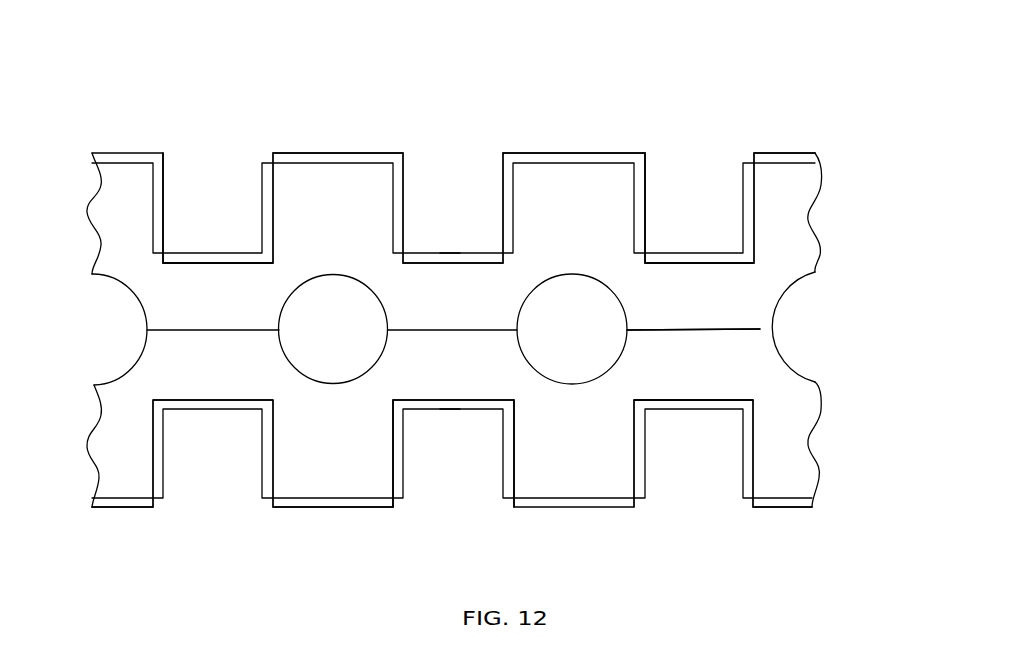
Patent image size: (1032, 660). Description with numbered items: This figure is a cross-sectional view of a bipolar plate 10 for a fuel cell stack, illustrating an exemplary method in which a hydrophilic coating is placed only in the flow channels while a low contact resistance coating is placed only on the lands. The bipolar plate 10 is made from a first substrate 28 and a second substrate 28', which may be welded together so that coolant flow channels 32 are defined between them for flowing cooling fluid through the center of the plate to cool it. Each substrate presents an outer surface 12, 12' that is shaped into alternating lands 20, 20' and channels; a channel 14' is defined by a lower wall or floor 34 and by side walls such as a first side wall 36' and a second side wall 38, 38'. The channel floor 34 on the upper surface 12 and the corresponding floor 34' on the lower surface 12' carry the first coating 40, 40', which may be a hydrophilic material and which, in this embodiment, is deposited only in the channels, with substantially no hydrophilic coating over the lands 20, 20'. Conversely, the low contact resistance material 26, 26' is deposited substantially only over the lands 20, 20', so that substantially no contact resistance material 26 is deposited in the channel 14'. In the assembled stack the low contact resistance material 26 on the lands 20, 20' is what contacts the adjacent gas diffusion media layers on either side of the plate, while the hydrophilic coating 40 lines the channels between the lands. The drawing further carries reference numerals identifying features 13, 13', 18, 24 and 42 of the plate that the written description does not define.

The bipolar plate 10 is at (830, 186).
The surface 12 is at (480, 177).
The surface 12' is at (482, 481).
The first side 13 is at (528, 346).
The second side 13' is at (773, 309).
The channel 14' is at (694, 331).
The lateral direction arrows 18 is at (129, 322).
The land 20 is at (194, 166).
The land 20' is at (362, 496).
The top wall portion 24 is at (308, 156).
The low contact resistance material 26 is at (393, 169).
The low contact resistance material 26' is at (440, 549).
The first substrate 28 is at (830, 267).
The second substrate 28' is at (835, 444).
The coolant flow channel 32 is at (550, 379).
The lower wall or floor 34 is at (443, 277).
The layer thickness 34' is at (443, 390).
The sidewall 36' is at (366, 453).
The second side wall 38 is at (539, 208).
The second side wall 38' is at (548, 453).
The first coating 40 is at (495, 162).
The bottom wall portion 40' is at (693, 433).
The top surface portion 42 is at (537, 157).